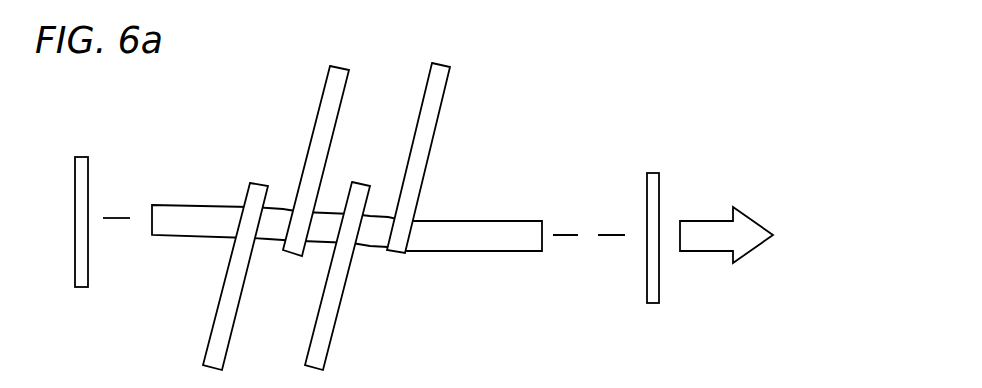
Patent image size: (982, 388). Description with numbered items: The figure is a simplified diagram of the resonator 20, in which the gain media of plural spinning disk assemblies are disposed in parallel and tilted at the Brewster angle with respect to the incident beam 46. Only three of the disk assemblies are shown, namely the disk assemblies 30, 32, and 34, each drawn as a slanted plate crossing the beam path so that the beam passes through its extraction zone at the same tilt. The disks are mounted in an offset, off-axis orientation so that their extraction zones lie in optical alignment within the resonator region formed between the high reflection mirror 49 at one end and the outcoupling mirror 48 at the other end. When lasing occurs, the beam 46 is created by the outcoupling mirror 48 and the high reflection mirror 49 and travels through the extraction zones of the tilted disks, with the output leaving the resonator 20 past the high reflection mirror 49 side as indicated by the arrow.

The resonator 20 is at (542, 130).
The disk assembly 30 is at (212, 329).
The disk assembly 32 is at (318, 113).
The disk assembly 34 is at (337, 315).
The incident beam 46 is at (505, 251).
The outcoupling mirror 48 is at (73, 201).
The high reflection mirror 49 is at (660, 197).